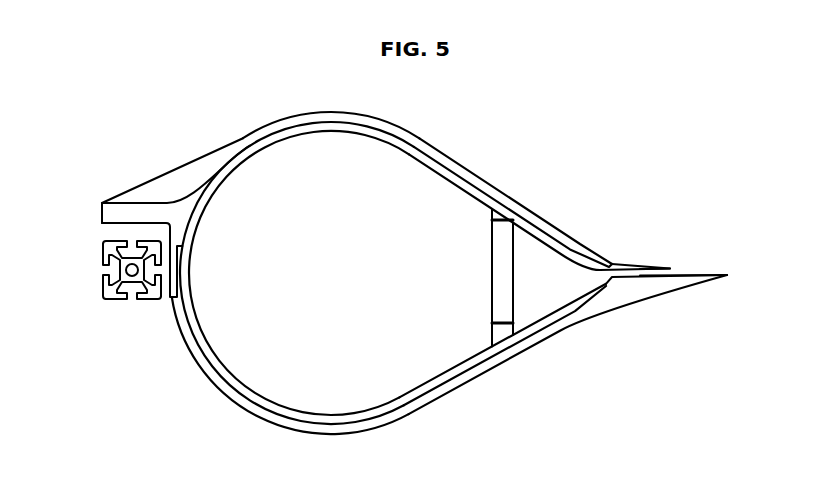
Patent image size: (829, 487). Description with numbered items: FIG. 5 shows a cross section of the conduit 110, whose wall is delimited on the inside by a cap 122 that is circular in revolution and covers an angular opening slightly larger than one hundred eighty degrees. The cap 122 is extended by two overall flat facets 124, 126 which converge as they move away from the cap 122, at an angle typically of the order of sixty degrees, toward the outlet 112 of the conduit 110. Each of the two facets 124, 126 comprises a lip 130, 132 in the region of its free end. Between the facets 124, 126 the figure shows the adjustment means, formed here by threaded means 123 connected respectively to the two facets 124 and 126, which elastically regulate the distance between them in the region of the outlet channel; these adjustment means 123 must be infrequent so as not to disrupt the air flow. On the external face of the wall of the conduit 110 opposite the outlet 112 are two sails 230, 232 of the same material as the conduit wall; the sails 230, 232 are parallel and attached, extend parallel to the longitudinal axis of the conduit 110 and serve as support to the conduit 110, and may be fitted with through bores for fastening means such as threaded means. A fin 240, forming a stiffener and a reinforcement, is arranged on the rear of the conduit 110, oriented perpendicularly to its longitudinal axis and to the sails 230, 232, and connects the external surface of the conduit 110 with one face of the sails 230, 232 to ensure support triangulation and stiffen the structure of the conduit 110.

The conduit 110 is at (229, 439).
The outlet 112 is at (682, 268).
The cap 122 is at (198, 302).
The threaded means 123 is at (500, 273).
The facet 124 is at (452, 378).
The facet 126 is at (455, 168).
The lip 130 is at (624, 291).
The lip 132 is at (648, 257).
The sail 230 is at (123, 232).
The sail 232 is at (122, 213).
The fin 240 is at (164, 192).